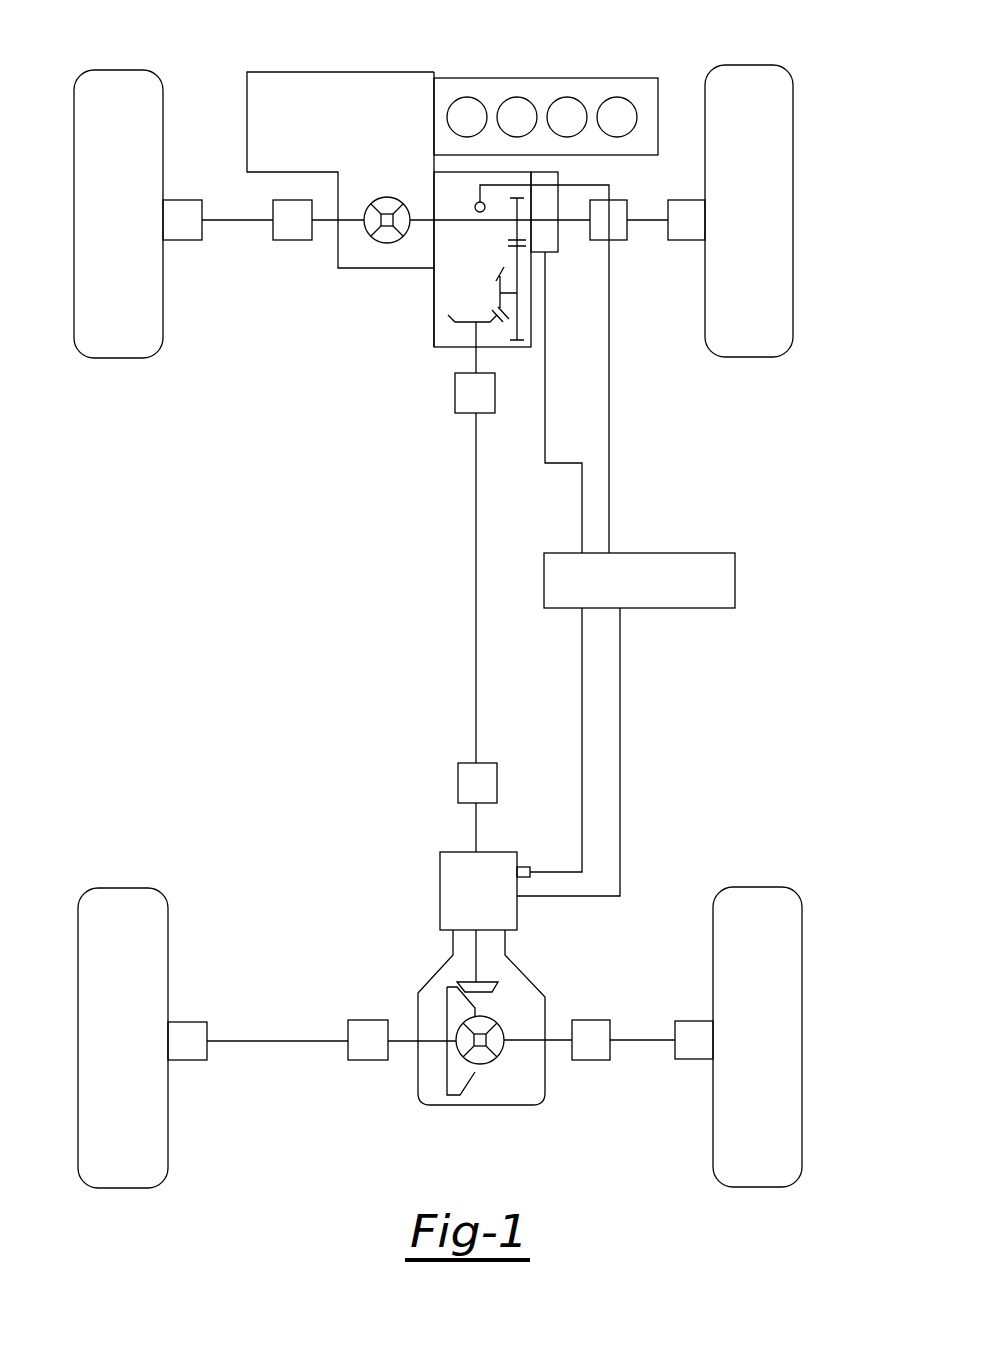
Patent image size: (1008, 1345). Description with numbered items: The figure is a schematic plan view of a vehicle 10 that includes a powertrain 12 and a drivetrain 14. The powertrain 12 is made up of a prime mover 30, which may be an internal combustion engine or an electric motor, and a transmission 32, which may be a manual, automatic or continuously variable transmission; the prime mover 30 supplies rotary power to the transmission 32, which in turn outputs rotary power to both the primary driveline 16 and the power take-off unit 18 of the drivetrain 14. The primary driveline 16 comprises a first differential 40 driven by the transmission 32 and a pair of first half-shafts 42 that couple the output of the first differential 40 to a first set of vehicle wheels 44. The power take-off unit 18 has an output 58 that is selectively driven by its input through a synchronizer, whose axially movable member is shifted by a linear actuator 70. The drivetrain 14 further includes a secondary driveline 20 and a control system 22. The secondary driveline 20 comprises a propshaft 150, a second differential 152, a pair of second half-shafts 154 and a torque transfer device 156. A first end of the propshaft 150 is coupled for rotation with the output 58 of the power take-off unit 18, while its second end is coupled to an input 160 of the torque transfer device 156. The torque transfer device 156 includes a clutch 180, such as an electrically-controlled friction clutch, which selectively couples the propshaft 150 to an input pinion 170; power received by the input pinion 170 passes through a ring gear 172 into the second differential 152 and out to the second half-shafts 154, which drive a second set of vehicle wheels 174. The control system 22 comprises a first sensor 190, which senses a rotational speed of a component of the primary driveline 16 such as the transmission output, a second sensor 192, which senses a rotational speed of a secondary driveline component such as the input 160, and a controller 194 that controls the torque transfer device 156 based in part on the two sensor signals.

The vehicle 10 is at (830, 424).
The powertrain 12 is at (540, 50).
The drivetrain 14 is at (408, 598).
The primary driveline 16 is at (318, 272).
The power take-off unit 18 is at (405, 335).
The secondary driveline 20 is at (386, 1108).
The control system 22 is at (668, 535).
The prime mover 30 is at (497, 78).
The transmission 32 is at (343, 72).
The first differential 40 is at (380, 197).
The first half-shafts 42 is at (228, 220).
The first set of vehicle wheels 44 is at (105, 358).
The output 58 is at (476, 362).
The linear actuator 70 is at (560, 265).
The propshaft 150 is at (477, 678).
The second differential 152 is at (498, 1048).
The second half-shafts 154 is at (283, 1041).
The torque transfer device 156 is at (440, 903).
The input 160 is at (477, 828).
The input pinion 170 is at (493, 992).
The ring gear 172 is at (453, 1002).
The second set of vehicle wheels 174 is at (120, 888).
The clutch 180 is at (507, 907).
The first sensor 190 is at (480, 212).
The second sensor 192 is at (522, 867).
The controller 194 is at (735, 585).